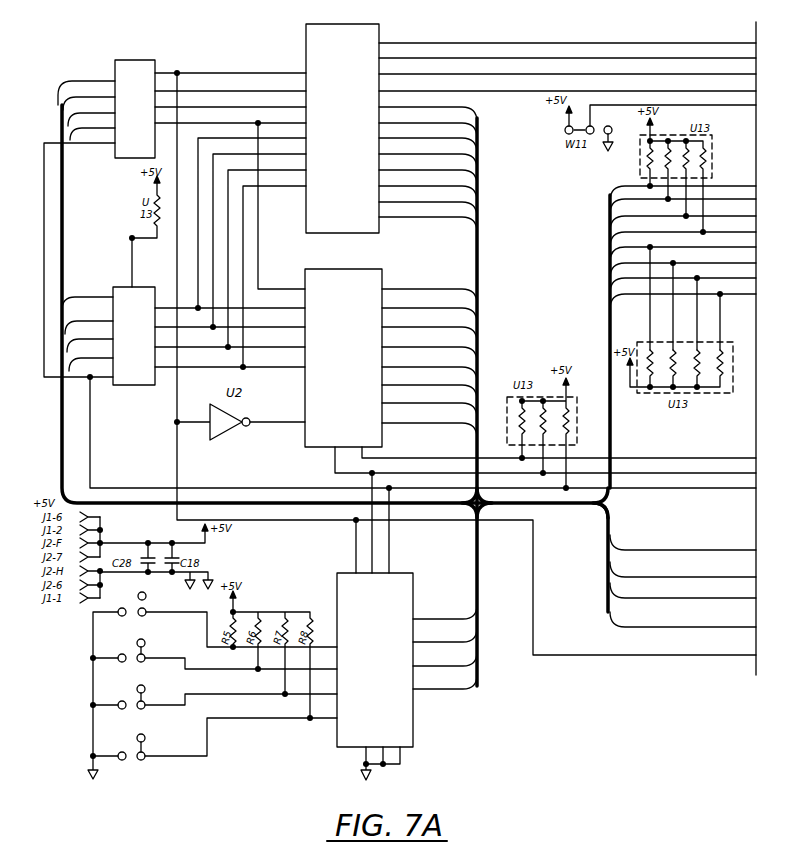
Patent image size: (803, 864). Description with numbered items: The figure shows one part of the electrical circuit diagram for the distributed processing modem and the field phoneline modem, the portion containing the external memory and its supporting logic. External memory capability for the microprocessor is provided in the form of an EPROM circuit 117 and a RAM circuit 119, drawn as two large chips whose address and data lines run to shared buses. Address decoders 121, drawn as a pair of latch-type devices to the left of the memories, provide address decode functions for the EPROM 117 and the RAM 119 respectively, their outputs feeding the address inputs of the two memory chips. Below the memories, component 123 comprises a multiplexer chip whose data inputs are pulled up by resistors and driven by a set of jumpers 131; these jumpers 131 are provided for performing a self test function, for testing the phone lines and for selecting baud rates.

The EPROM circuit 117 is at (380, 24).
The RAM circuit 119 is at (382, 269).
The address decoders 121 is at (157, 60).
The multiplexer chip 123 is at (413, 573).
The jumpers 131 is at (146, 622).